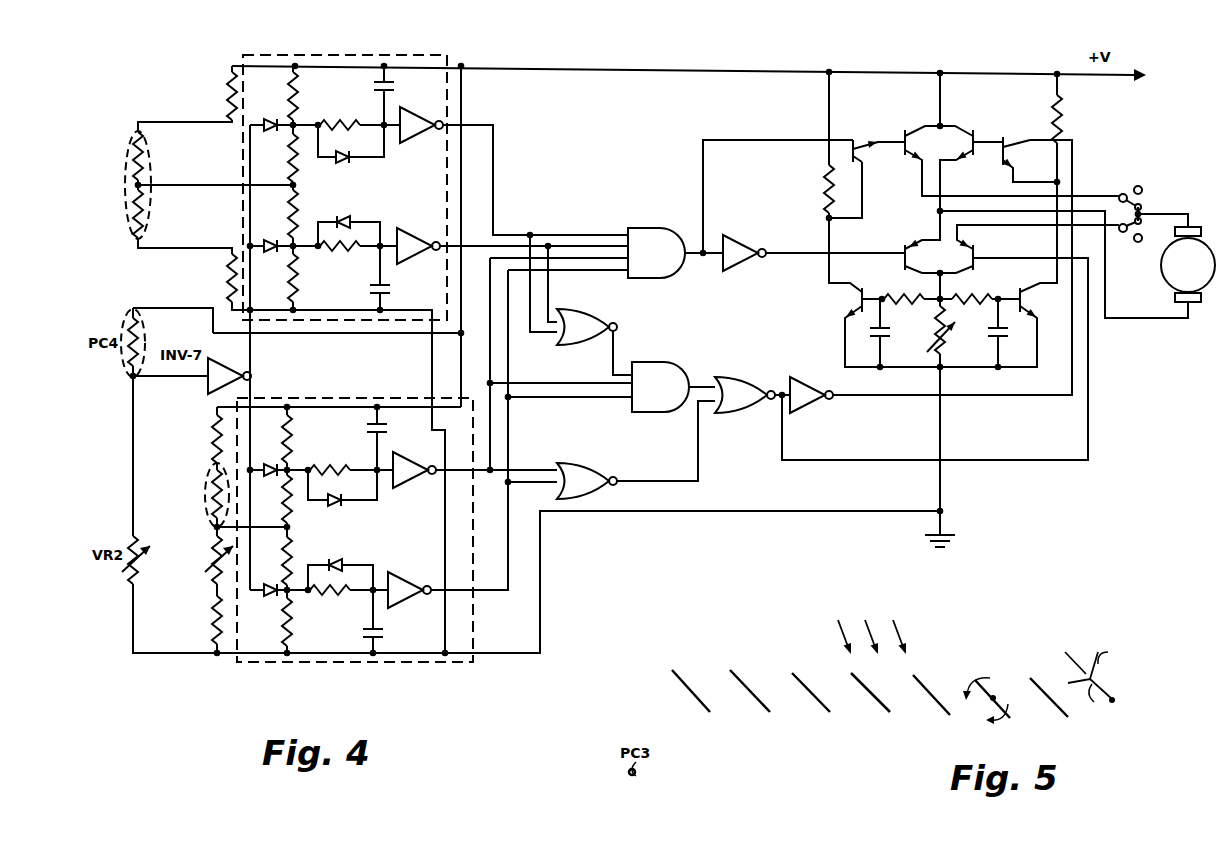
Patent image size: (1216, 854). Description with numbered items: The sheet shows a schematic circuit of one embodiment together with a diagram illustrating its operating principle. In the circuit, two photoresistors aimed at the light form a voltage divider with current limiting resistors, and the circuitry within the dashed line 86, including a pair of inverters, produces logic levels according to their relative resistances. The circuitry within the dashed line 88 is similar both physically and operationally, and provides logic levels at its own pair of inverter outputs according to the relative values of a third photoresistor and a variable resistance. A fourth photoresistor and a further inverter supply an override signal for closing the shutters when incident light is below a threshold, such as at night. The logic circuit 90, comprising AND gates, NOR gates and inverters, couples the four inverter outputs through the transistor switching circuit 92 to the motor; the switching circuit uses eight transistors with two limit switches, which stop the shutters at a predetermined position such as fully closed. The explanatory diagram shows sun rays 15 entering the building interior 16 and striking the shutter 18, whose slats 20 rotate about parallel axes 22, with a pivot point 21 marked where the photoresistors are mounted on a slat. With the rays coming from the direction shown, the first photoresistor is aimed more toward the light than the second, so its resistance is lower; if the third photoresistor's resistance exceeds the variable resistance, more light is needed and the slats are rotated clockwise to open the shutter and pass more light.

In FIG. 4, the dashed line circuitry 86 is at (372, 56).
In FIG. 4, the dashed line circuitry 88 is at (473, 662).
In FIG. 4, the logic circuit 90 is at (608, 164).
In FIG. 4, the transistor switching circuit 92 is at (995, 466).
In FIG. 5, the sun rays 15 is at (842, 643).
In FIG. 5, the building interior 16 is at (861, 777).
In FIG. 5, the shutter 18 is at (759, 724).
In FIG. 5, the slats 20 is at (731, 684).
In FIG. 5, the photocell mounting pivot 21 is at (1115, 700).
In FIG. 5, the parallel axes 22 is at (1000, 698).